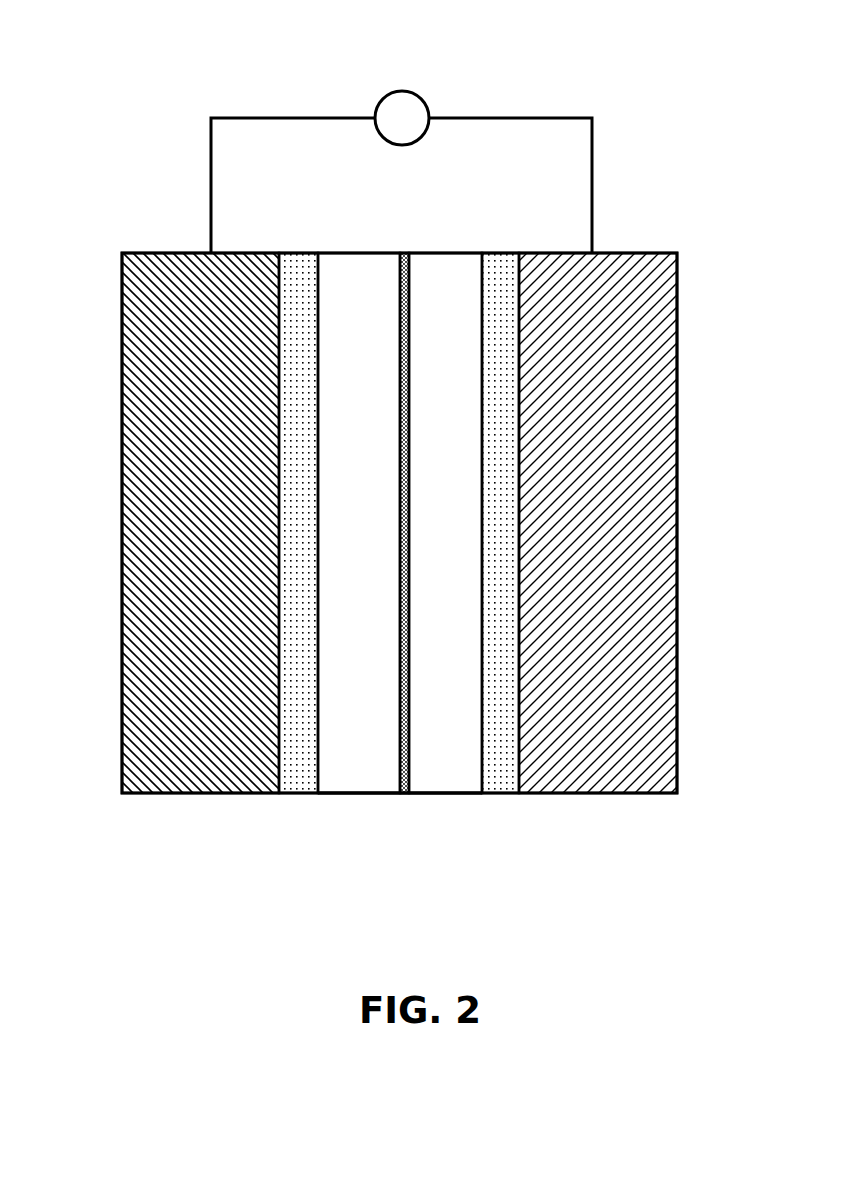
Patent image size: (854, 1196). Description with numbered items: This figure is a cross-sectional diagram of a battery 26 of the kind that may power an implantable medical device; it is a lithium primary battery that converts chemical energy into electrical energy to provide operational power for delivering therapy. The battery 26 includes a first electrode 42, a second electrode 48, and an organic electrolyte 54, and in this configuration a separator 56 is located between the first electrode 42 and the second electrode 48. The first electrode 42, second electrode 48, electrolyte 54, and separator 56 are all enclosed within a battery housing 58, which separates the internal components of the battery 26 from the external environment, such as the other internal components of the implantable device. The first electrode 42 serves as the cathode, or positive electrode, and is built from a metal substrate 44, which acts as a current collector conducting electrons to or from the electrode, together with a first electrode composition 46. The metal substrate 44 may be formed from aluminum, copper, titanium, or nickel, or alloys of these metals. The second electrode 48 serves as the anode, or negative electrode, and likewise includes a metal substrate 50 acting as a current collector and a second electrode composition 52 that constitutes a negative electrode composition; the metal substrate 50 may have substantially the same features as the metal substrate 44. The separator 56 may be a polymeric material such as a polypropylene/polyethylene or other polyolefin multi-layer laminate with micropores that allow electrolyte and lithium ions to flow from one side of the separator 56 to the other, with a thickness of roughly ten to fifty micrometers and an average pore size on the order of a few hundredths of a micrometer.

The battery 26 is at (641, 75).
The first electrode 42 is at (211, 575).
The metal substrate 44 is at (140, 397).
The first electrode composition 46 is at (324, 523).
The second electrode 48 is at (580, 568).
The metal substrate 50 is at (660, 397).
The second electrode composition 52 is at (497, 372).
The organic electrolyte 54 is at (428, 340).
The separator 56 is at (410, 505).
The battery housing 58 is at (363, 793).